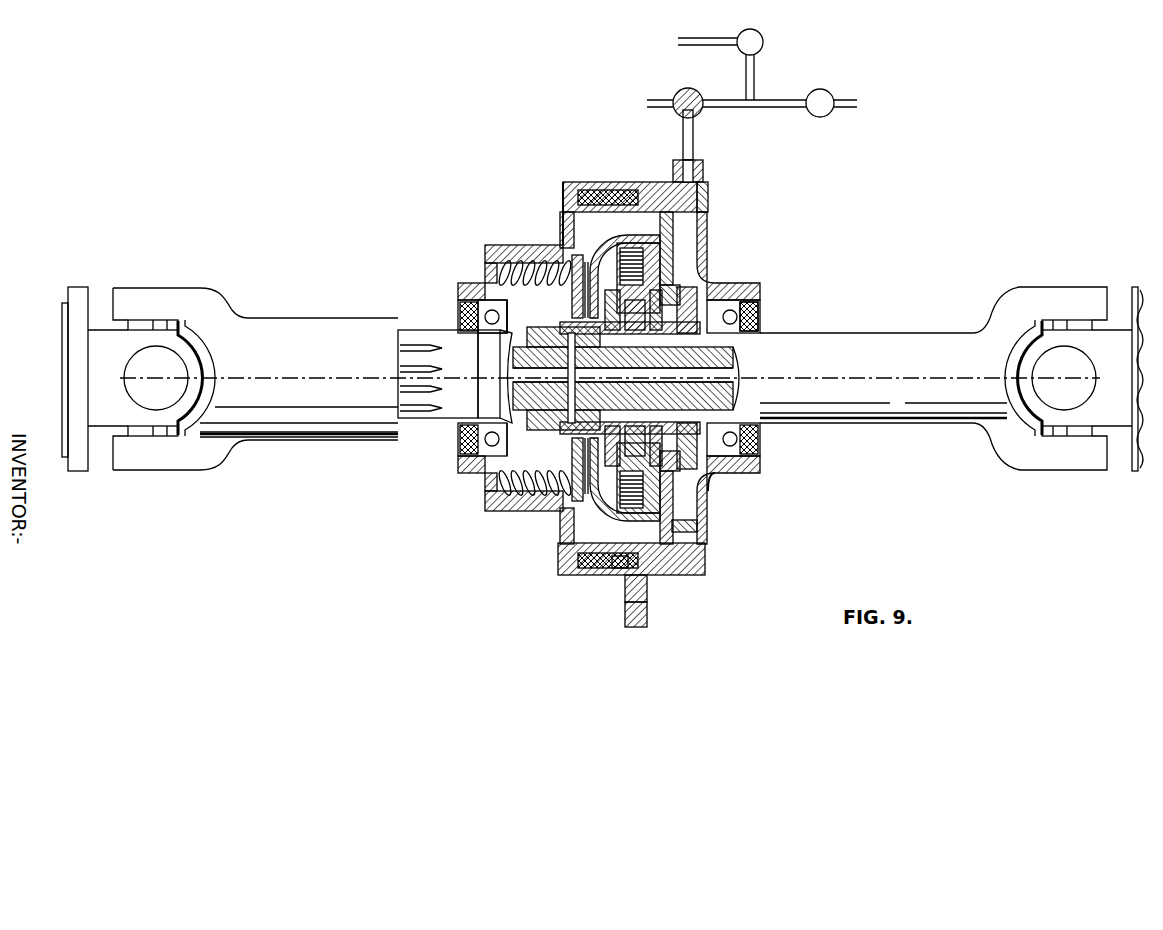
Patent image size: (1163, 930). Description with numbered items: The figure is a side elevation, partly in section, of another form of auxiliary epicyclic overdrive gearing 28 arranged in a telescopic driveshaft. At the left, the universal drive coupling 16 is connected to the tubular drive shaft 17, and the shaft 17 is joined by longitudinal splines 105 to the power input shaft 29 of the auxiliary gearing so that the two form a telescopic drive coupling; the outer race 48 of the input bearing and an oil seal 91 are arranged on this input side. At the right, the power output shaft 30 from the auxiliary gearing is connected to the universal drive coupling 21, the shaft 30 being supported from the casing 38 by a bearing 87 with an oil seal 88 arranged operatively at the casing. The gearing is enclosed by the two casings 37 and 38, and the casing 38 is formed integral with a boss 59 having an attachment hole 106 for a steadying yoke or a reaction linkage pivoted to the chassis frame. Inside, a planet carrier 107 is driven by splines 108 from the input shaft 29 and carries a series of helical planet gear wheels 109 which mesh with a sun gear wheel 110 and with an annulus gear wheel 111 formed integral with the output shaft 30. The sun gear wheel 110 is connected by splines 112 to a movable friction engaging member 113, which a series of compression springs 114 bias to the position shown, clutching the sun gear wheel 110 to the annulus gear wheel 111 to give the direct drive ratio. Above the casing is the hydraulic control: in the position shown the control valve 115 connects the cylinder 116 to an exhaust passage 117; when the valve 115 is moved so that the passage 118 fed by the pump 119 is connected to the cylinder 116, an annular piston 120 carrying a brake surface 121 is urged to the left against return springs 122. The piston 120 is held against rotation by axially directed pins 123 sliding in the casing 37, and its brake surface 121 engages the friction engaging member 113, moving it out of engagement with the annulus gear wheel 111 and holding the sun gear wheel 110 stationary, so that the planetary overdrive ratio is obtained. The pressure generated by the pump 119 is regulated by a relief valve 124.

The universal drive coupling 16 is at (167, 389).
The tubular drive shaft 17 is at (301, 360).
The universal drive coupling 21 is at (1075, 388).
The auxiliary gearing 28 is at (745, 218).
The power input shaft 29 is at (468, 364).
The power output shaft 30 is at (824, 363).
The casing 37 is at (567, 182).
The casing 38 is at (705, 262).
The outer race 48 is at (472, 292).
The boss 59 is at (648, 592).
The bearing 87 is at (752, 296).
The oil seal 88 is at (762, 308).
The oil seal 91 is at (470, 330).
The longitudinal splines 105 is at (462, 334).
The attachment hole 106 is at (648, 612).
The planet carrier 107 is at (600, 500).
The splines 108 is at (722, 374).
The helical planet gear wheels 109 is at (606, 243).
The sun gear wheel 110 is at (710, 478).
The annulus gear wheel 111 is at (600, 512).
The splines 112 is at (475, 460).
The friction engaging member 113 is at (616, 190).
The compression springs 114 is at (522, 476).
The control valve 115 is at (677, 93).
The cylinder 116 is at (708, 198).
The exhaust passage 117 is at (665, 100).
The passage 118 is at (733, 106).
The pump 119 is at (828, 90).
The annular piston 120 is at (672, 180).
The brake surface 121 is at (699, 528).
The return springs 122 is at (582, 572).
The axially directed pins 123 is at (618, 572).
The relief valve 124 is at (765, 44).